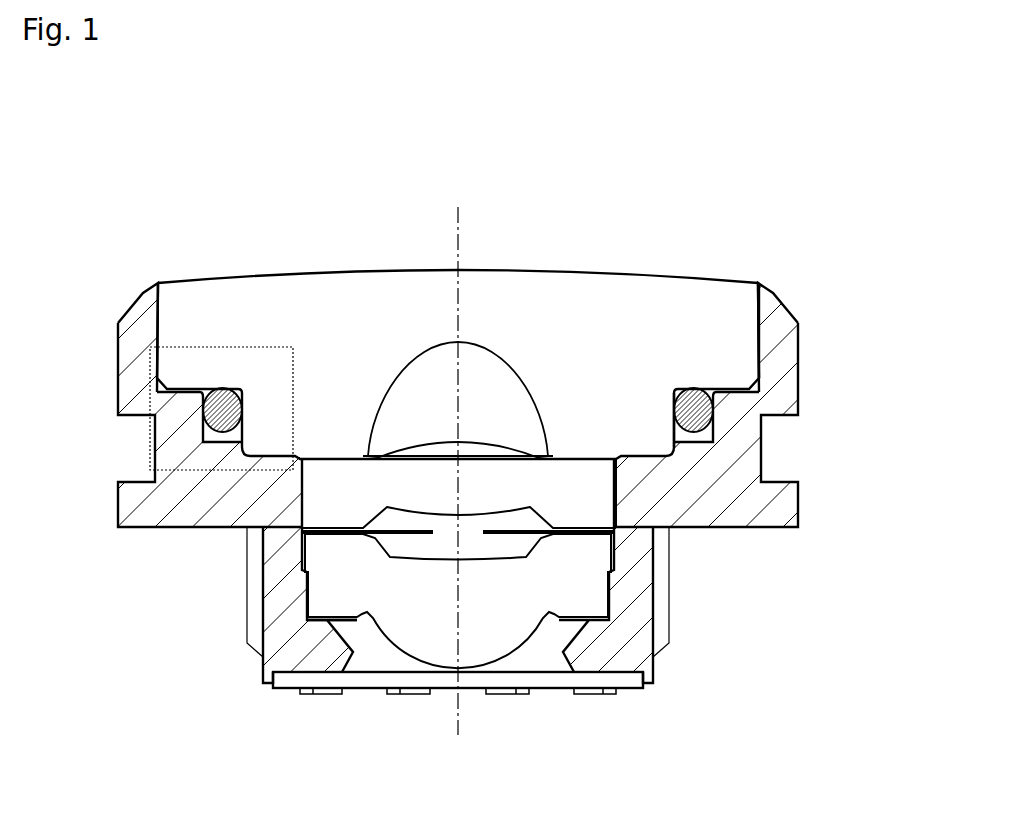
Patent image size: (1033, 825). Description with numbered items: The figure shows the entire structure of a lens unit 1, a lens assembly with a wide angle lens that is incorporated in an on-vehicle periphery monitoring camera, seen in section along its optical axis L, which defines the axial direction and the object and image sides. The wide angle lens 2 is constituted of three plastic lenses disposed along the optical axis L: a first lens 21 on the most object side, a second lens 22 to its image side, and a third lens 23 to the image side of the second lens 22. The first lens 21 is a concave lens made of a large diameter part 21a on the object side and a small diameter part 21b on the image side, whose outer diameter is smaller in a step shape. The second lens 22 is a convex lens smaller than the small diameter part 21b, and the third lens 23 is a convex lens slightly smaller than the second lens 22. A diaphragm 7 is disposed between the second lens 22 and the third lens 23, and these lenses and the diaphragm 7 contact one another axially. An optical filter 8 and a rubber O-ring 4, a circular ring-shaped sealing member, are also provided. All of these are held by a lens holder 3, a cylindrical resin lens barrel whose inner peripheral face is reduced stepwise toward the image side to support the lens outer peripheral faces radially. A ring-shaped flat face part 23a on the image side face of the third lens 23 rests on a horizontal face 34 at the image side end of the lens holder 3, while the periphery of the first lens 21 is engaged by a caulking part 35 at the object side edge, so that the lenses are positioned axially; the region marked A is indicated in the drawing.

The lens unit 1 is at (186, 124).
The wide angle lens 2 is at (647, 195).
The first lens 21 is at (523, 327).
The large diameter part 21a is at (779, 346).
The small diameter part 21b is at (673, 431).
The second lens 22 is at (507, 485).
The third lens 23 is at (495, 600).
The ring-shaped flat face part 23a is at (348, 623).
The lens holder 3 is at (274, 581).
The horizontal face 34 is at (322, 623).
The caulking part 35 is at (158, 284).
The O-ring 4 is at (203, 408).
The diaphragm 7 is at (613, 529).
The optical filter 8 is at (558, 690).
The region A (enlarged portion) A is at (218, 345).
The optical axis L is at (456, 457).